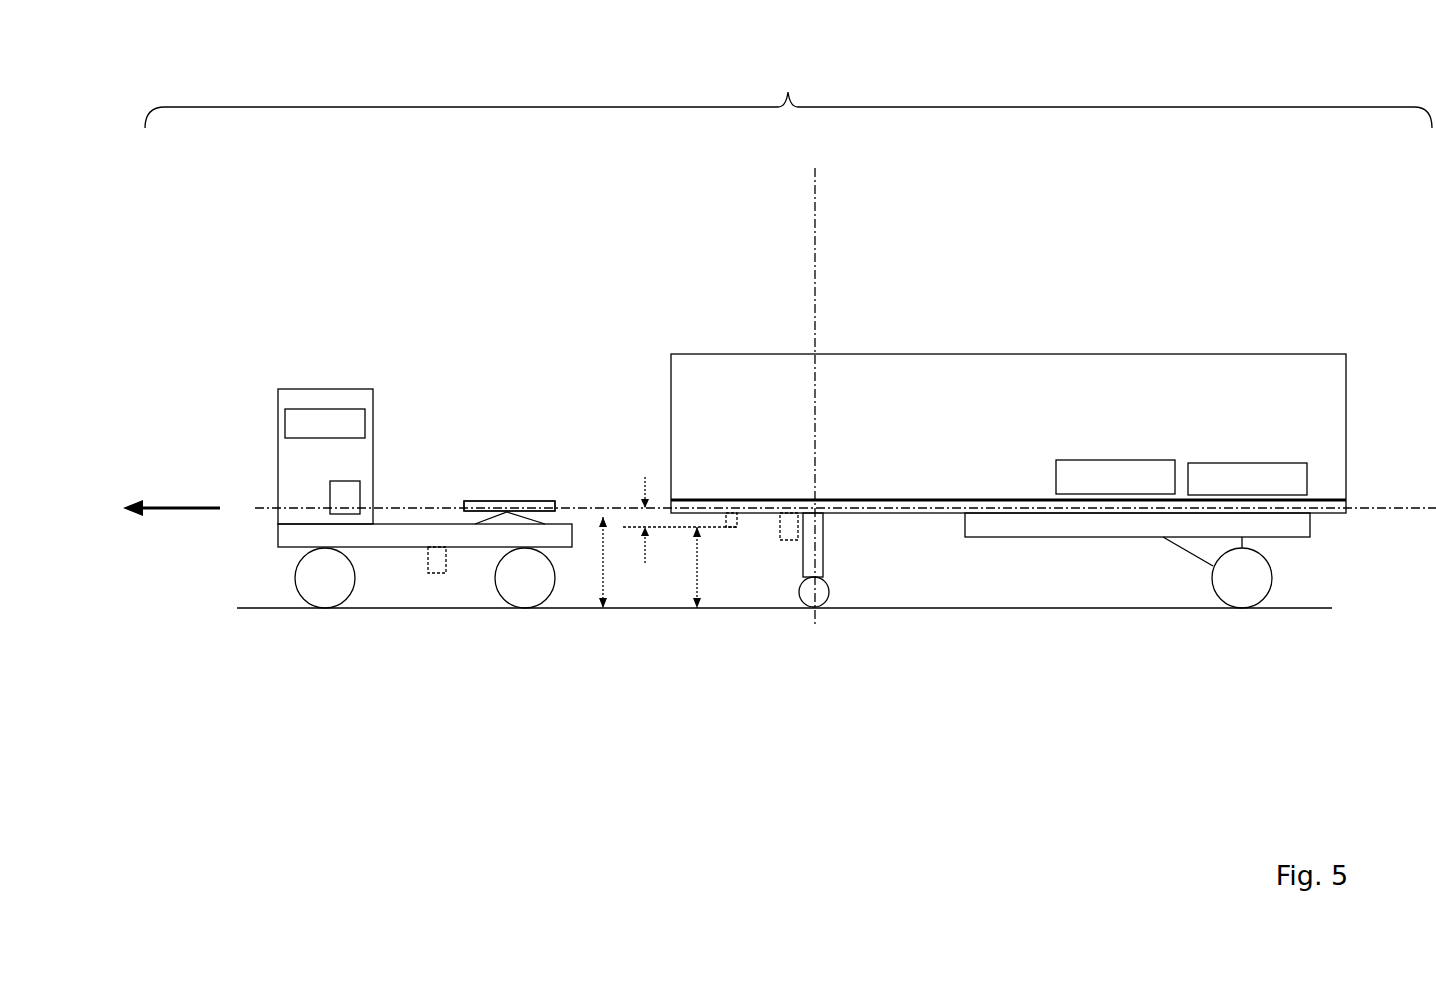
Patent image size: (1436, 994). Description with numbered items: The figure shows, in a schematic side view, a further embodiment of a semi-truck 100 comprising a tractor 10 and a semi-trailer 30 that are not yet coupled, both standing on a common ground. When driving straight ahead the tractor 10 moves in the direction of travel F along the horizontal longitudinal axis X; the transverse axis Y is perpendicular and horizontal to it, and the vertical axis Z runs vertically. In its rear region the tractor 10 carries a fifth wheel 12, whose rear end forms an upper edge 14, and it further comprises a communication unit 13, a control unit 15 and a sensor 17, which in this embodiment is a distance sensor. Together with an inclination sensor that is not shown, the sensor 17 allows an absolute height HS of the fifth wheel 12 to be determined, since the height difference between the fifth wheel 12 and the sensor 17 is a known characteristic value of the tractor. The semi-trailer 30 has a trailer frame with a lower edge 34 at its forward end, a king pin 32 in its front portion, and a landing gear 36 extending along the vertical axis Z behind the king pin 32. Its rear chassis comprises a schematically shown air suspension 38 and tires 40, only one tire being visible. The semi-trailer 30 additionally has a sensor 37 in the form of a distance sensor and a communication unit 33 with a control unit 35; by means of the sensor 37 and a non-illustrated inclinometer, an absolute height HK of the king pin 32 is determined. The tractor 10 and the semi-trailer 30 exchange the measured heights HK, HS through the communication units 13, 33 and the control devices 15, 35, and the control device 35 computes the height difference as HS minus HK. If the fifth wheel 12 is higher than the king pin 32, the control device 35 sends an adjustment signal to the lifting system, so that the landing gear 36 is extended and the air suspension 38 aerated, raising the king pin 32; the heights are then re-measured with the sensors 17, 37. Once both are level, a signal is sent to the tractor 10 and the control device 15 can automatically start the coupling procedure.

The semi-truck 100 is at (788, 91).
The tractor 10 is at (246, 473).
The fifth wheel 12 is at (500, 507).
The communication unit 13 is at (327, 423).
The upper edge 14 is at (555, 503).
The control unit 15 is at (340, 490).
The sensor 17 is at (438, 557).
The semi-trailer 30 is at (766, 342).
The king pin 32 is at (737, 528).
The communication unit 33 is at (1092, 475).
The lower edge 34 is at (673, 528).
The control unit 35 is at (1227, 475).
The landing gear 36 is at (820, 553).
The sensor 37 is at (785, 520).
The air suspension 38 is at (1198, 548).
The tires 40 is at (1240, 577).
The direction of travel F is at (145, 512).
The longitudinal axis X is at (1412, 508).
The transverse axis Y is at (825, 515).
The vertical axis Z is at (815, 206).
The absolute height of the fifth wheel HS is at (605, 562).
The absolute height of the king pin HK is at (698, 567).